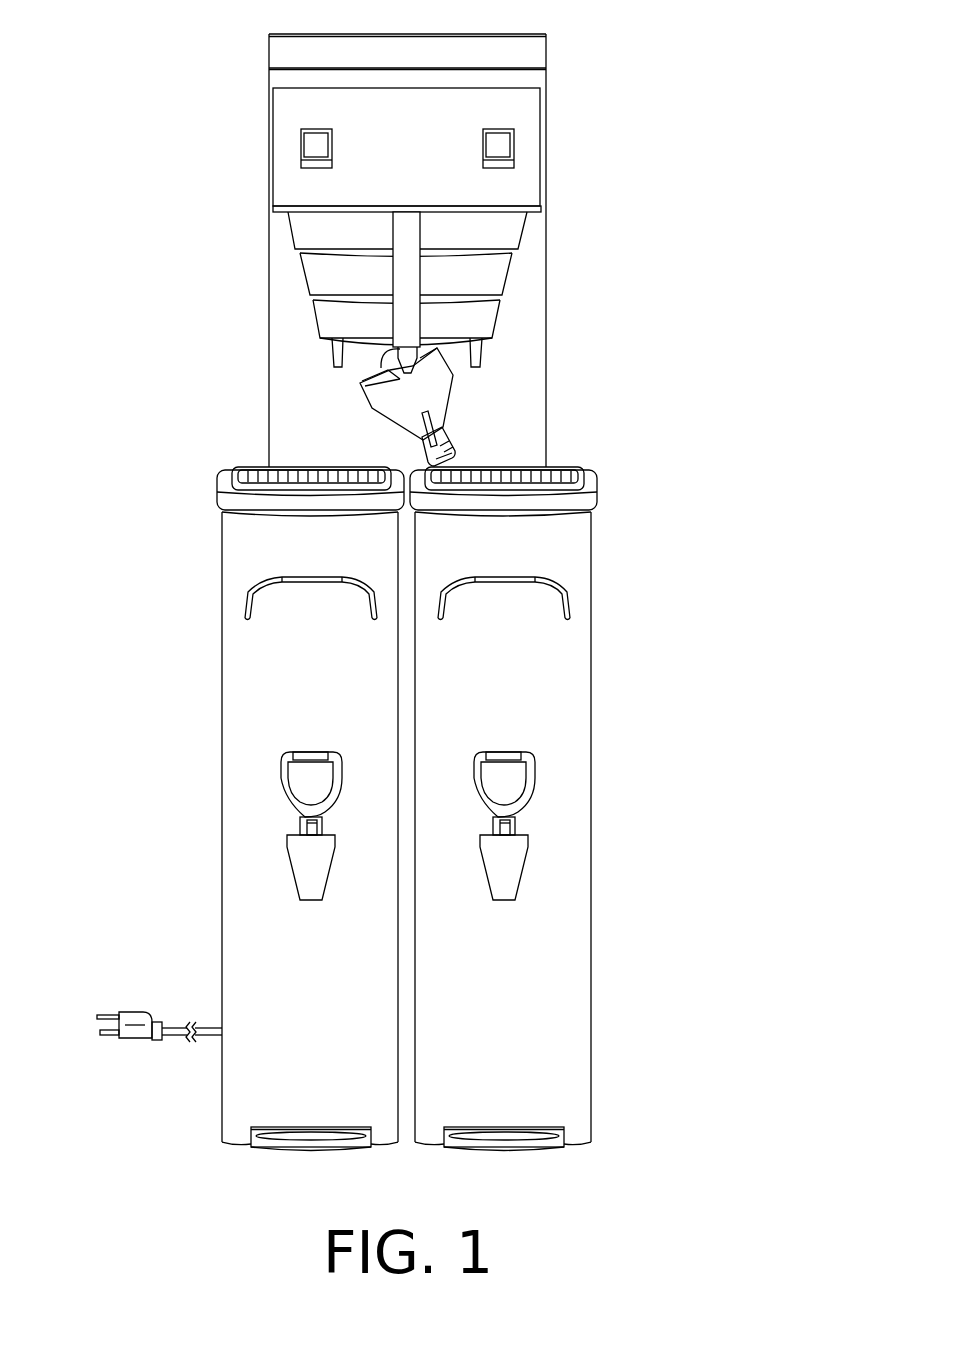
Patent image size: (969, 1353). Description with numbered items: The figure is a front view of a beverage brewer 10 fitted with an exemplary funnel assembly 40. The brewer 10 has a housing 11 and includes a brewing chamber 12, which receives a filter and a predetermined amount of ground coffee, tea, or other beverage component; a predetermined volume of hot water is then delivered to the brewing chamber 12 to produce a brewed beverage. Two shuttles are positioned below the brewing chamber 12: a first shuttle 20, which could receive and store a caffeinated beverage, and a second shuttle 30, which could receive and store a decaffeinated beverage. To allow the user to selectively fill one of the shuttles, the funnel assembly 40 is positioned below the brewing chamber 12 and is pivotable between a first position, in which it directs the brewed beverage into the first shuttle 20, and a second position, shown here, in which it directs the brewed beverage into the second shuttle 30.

The beverage brewer 10 is at (147, 128).
The housing 11 is at (521, 431).
The brewing chamber 12 is at (527, 273).
The first shuttle 20 is at (235, 563).
The second shuttle 30 is at (580, 550).
The funnel assembly 40 is at (385, 395).